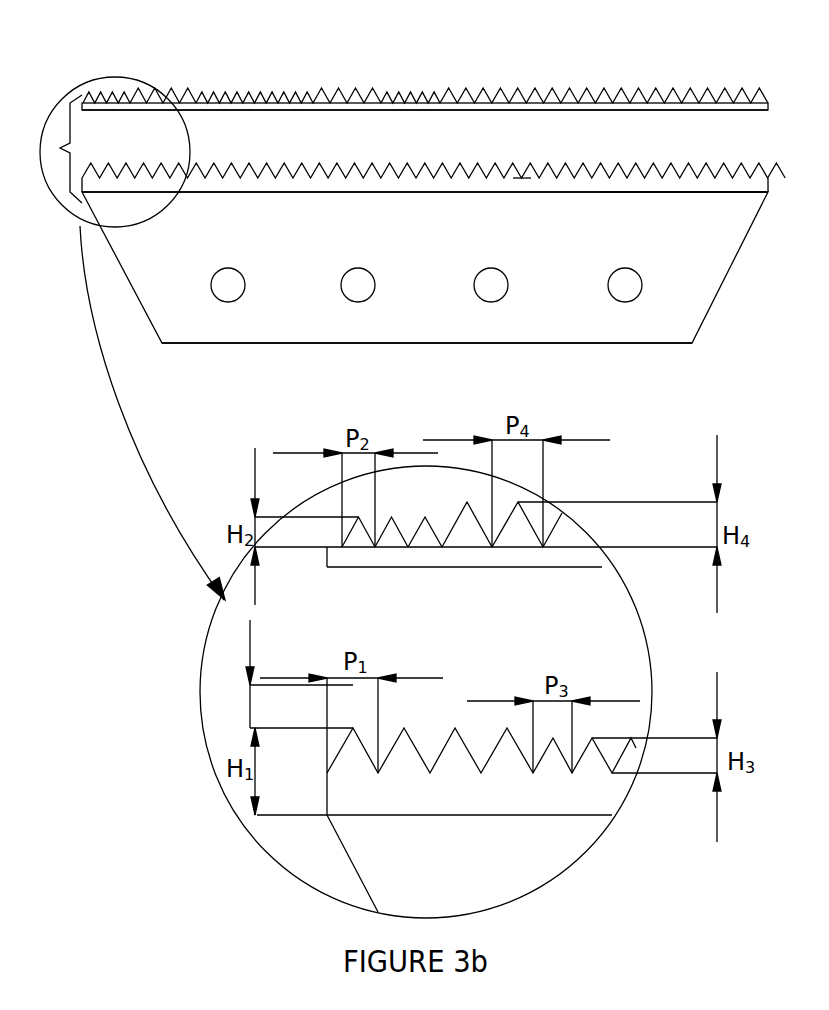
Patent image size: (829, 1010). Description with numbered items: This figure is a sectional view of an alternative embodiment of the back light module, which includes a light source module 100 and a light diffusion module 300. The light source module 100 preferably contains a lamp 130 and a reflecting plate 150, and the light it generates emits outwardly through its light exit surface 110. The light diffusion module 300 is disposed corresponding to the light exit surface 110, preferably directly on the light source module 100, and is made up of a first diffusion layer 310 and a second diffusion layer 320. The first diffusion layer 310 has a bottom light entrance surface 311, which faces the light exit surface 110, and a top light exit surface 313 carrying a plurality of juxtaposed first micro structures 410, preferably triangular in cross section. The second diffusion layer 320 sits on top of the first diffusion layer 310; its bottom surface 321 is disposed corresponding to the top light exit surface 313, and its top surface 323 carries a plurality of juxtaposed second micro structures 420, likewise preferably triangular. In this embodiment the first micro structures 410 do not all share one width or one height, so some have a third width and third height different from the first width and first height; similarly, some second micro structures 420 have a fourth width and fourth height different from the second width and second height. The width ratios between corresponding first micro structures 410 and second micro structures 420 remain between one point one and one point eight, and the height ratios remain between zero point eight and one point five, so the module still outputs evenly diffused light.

The light source module 100 is at (713, 307).
The light exit surface 110 is at (522, 185).
The lamp 130 is at (625, 285).
The reflecting plate 150 is at (545, 343).
The light diffusion module 300 is at (60, 148).
The first diffusion layer 310 is at (557, 190).
The bottom light entrance surface 311 is at (690, 200).
The top light exit surface 313 is at (616, 160).
The second diffusion layer 320 is at (657, 108).
The bottom surface 321 is at (692, 112).
The top surface 323 is at (548, 92).
The first micro structures 410 is at (378, 178).
The second micro structures 420 is at (310, 98).